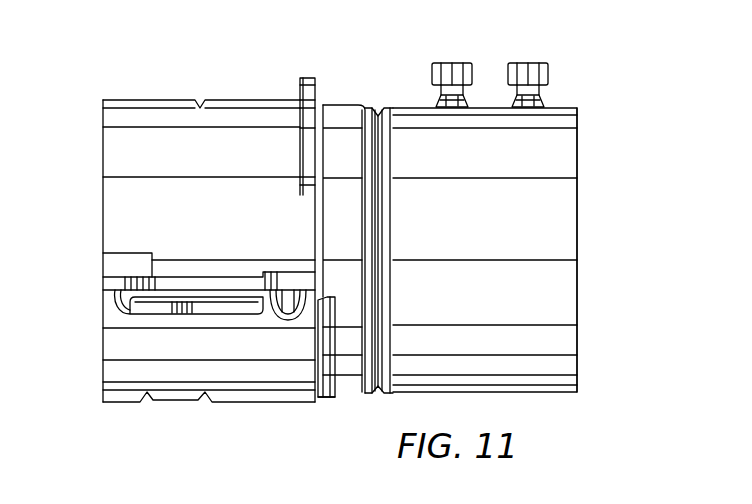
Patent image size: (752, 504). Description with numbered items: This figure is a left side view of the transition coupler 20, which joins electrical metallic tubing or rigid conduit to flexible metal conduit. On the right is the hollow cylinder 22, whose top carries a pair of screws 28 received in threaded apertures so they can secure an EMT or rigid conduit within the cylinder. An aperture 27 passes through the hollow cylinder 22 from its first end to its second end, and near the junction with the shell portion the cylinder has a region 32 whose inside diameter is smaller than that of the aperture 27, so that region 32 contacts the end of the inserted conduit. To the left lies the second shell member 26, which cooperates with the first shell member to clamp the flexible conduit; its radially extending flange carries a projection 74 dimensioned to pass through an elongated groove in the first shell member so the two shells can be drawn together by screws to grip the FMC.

The transition coupler 20 is at (626, 102).
The hollow cylinder 22 is at (414, 108).
The second shell member 26 is at (263, 112).
The aperture 27 is at (584, 283).
The screws 28 is at (530, 63).
The region 32 is at (376, 180).
The projection 74 is at (130, 296).